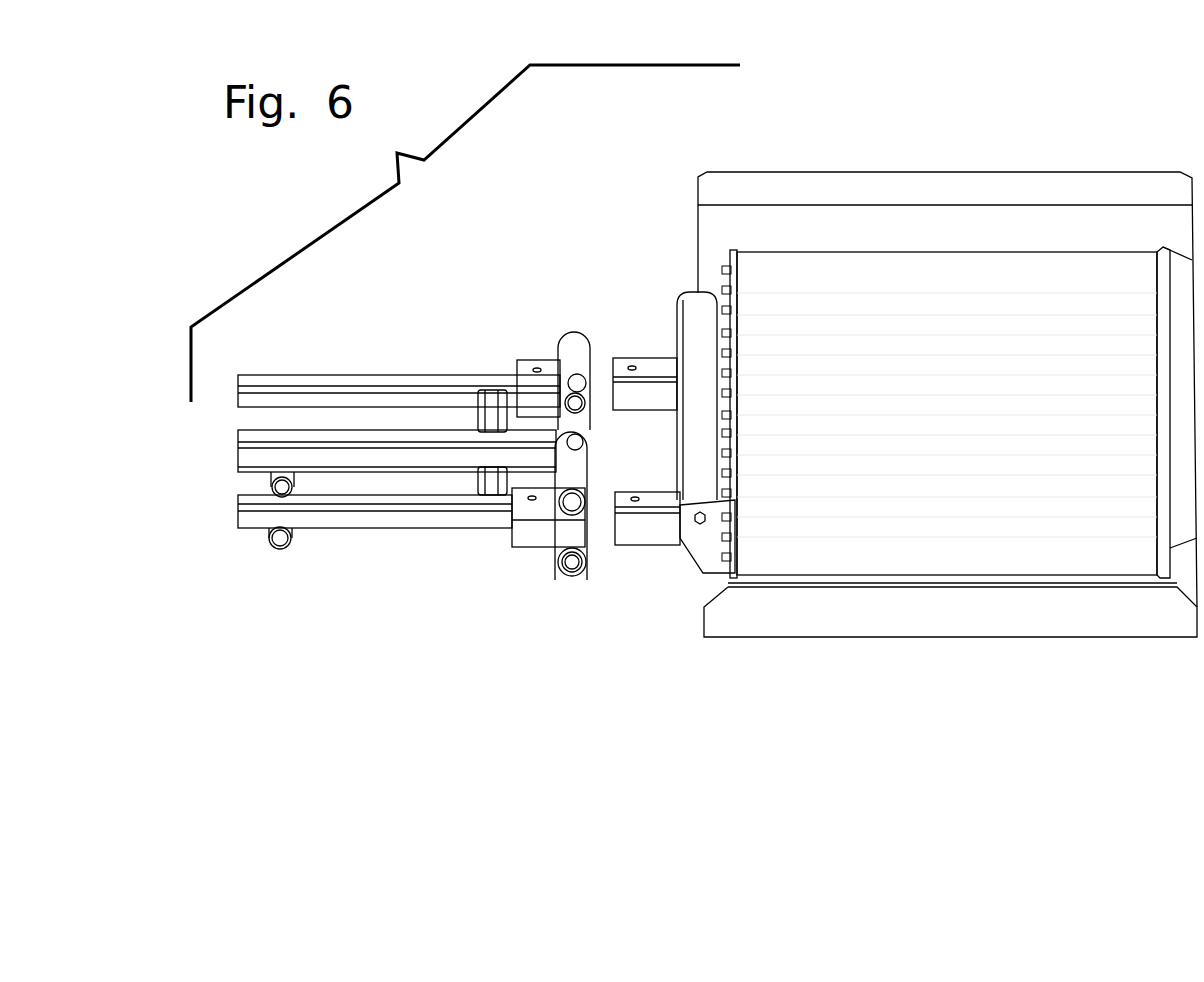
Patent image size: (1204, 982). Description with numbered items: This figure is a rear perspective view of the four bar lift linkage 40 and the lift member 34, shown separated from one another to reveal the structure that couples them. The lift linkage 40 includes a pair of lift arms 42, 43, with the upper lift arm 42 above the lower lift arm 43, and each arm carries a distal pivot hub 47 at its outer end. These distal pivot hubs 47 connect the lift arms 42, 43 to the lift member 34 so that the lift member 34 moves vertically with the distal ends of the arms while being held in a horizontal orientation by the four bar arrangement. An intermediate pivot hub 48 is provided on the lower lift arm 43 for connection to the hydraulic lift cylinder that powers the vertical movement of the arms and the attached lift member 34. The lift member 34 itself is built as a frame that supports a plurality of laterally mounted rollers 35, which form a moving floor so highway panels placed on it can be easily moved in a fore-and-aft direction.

The lift member 34 is at (1045, 183).
The rollers 35 is at (980, 608).
The four bar lift linkage 40 is at (507, 318).
The lift arm 42 is at (403, 395).
The lower lift arm 43 is at (457, 520).
The distal pivot hub 47 is at (575, 345).
The intermediate pivot hub 48 is at (267, 542).